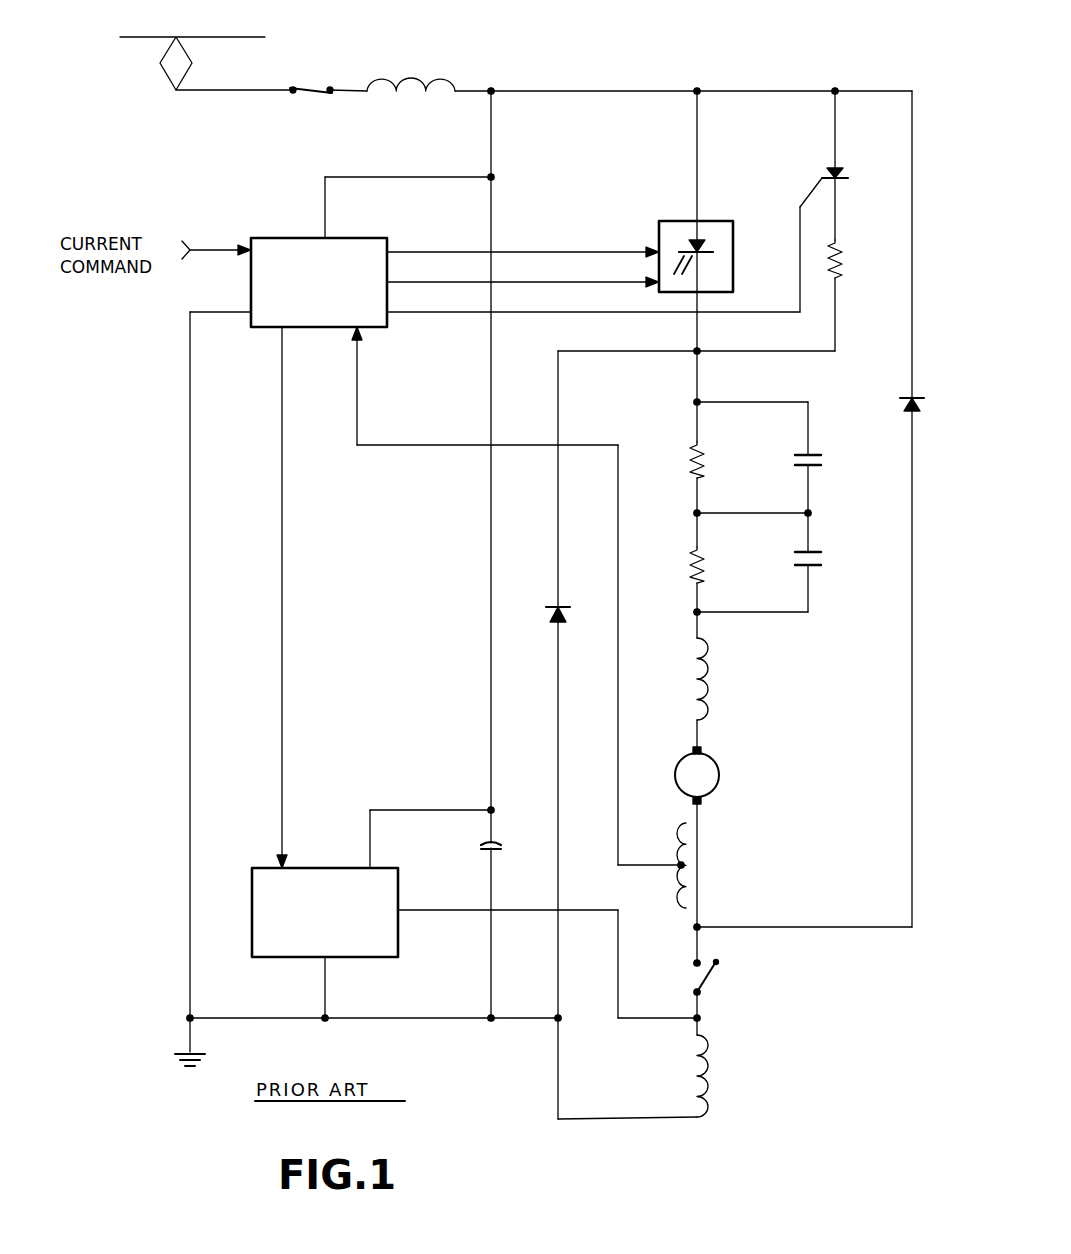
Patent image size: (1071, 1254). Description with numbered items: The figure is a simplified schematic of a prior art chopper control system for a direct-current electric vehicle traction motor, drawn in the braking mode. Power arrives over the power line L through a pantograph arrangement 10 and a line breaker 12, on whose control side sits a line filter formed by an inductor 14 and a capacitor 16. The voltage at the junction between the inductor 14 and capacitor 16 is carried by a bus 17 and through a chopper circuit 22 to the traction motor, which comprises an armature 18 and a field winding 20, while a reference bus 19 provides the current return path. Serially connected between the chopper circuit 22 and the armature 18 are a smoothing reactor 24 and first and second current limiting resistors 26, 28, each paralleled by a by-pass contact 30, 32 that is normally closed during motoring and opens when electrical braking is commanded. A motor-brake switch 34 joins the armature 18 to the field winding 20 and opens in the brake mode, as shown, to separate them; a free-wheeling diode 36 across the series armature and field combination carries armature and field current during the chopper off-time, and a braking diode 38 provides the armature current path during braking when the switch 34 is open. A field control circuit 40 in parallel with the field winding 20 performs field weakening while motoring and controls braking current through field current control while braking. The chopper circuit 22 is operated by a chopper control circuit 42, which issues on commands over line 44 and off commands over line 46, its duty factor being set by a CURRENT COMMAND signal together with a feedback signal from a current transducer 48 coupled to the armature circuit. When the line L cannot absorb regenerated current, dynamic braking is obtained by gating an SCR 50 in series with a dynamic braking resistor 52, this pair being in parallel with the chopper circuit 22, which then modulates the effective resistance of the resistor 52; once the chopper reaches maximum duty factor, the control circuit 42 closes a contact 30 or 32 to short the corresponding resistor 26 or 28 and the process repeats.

The power line L is at (216, 37).
The pantograph arrangement 10 is at (159, 66).
The line breaker 12 is at (316, 86).
The inductor 14 is at (414, 79).
The capacitor 16 is at (481, 846).
The bus 17 is at (604, 90).
The armature 18 is at (719, 778).
The reference bus 19 is at (520, 1021).
The field winding 20 is at (712, 1076).
The chopper circuit 22 is at (664, 220).
The smoothing reactor 24 is at (712, 681).
The first current limiting resistor 26 is at (710, 462).
The second current limiting resistor 28 is at (708, 573).
The by-pass contact 30 is at (830, 463).
The by-pass contact 32 is at (830, 561).
The motor-brake switch 34 is at (712, 986).
The free-wheeling diode 36 is at (548, 606).
The braking diode 38 is at (905, 398).
The field control circuit 40 is at (398, 946).
The chopper control circuit 42 is at (284, 237).
The line 44 is at (605, 281).
The line 46 is at (541, 251).
The current transducer 48 is at (680, 874).
The SCR 50 is at (850, 171).
The dynamic braking resistor 52 is at (847, 260).